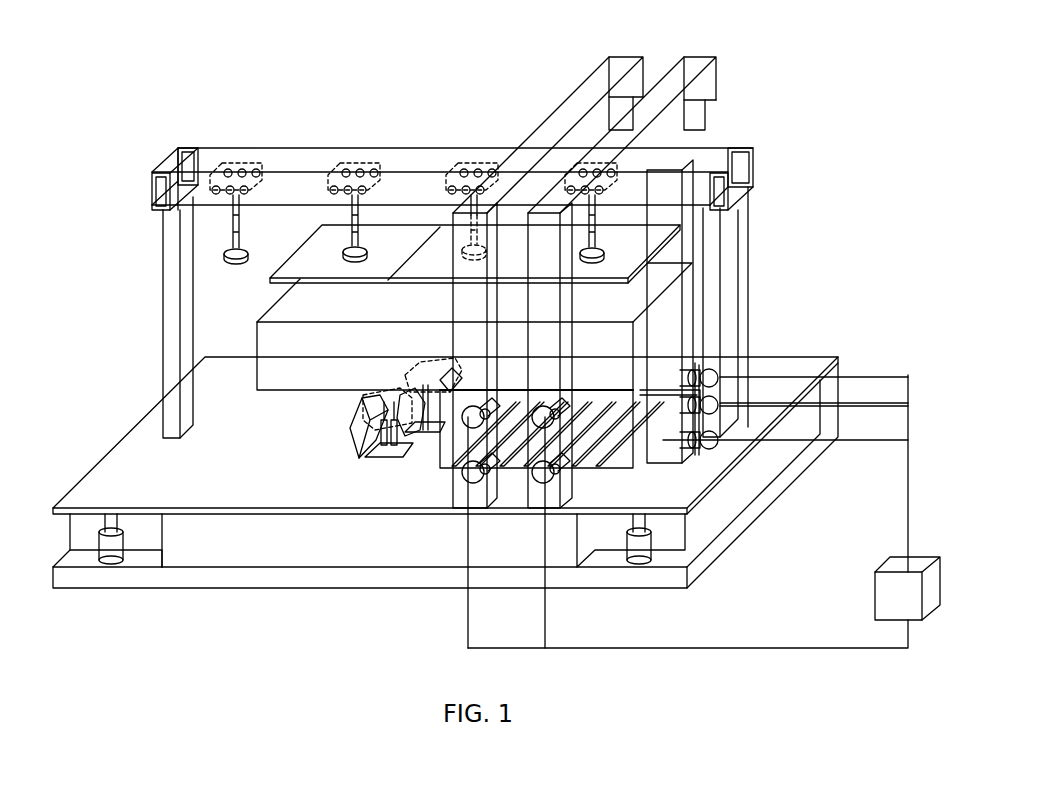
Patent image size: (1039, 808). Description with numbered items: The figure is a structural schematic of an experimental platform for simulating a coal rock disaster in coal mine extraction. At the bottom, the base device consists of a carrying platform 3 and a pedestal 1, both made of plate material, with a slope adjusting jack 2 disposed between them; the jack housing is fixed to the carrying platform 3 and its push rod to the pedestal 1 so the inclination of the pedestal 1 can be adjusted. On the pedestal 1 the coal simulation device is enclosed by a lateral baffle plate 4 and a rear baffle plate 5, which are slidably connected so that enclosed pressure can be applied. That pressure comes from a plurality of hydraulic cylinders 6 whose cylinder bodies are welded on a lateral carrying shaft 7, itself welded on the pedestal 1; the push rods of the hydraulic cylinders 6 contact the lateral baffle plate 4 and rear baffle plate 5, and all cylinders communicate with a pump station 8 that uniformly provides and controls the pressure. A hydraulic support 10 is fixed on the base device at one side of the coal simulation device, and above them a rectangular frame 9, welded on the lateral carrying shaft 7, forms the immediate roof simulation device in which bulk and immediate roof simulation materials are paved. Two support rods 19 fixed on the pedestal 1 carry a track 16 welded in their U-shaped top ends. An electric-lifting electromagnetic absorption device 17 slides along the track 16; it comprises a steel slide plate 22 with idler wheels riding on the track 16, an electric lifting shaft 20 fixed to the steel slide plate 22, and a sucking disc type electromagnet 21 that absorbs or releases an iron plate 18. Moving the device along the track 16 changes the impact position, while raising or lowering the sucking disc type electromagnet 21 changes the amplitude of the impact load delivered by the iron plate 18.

The pedestal 1 is at (680, 490).
The slope adjusting jack 2 is at (657, 551).
The carrying platform 3 is at (455, 570).
The lateral baffle plate 4 is at (485, 503).
The rear baffle plate 5 is at (665, 381).
The hydraulic cylinder 6 is at (448, 393).
The lateral carrying shaft 7 is at (717, 135).
The pump station 8 is at (898, 597).
The rectangular frame 9 is at (275, 375).
The hydraulic support 10 is at (346, 448).
The track 16 is at (280, 160).
The electric-lifting electromagnetic absorption device 17 is at (228, 163).
The iron plate 18 is at (310, 262).
The support rod 19 is at (170, 266).
The electric lifting shaft 20 is at (232, 222).
The sucking disc type electromagnet 21 is at (350, 250).
The steel slide plate 22 is at (368, 185).